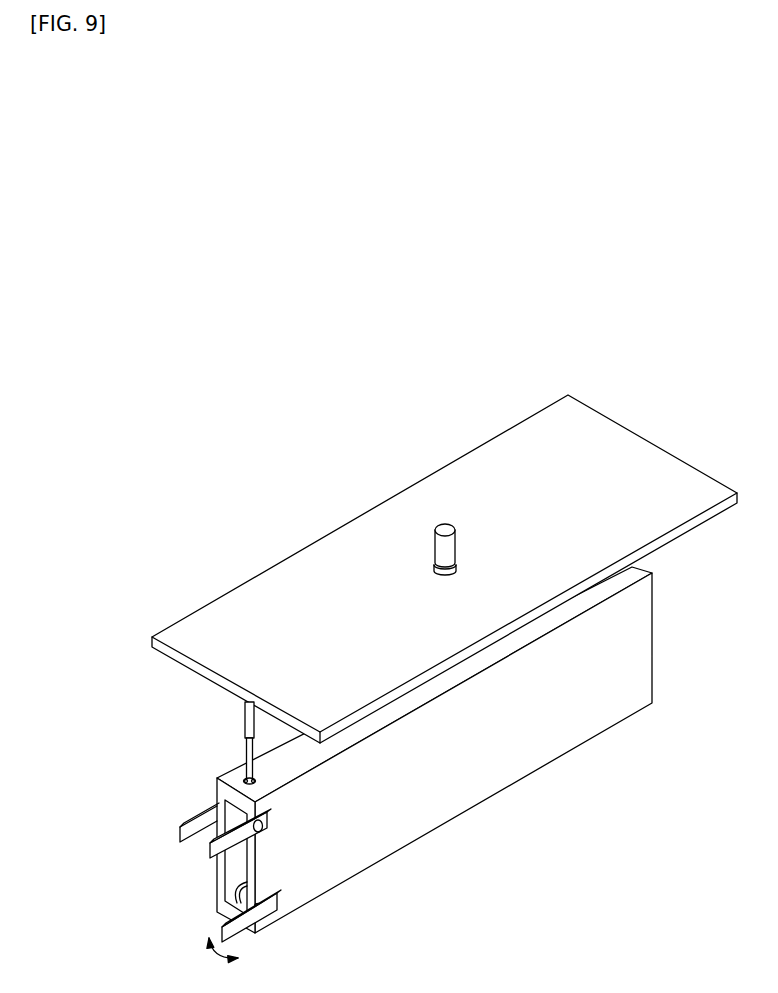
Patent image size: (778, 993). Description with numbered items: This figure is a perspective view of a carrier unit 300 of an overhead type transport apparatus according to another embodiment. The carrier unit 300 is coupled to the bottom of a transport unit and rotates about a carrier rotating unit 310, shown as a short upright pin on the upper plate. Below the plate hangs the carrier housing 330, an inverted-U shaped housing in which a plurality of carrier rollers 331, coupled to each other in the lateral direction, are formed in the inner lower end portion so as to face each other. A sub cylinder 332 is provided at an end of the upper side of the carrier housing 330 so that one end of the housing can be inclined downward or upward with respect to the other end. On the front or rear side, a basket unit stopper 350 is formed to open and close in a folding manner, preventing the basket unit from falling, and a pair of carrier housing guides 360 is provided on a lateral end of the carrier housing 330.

The carrier unit 300 is at (431, 659).
The carrier rotating unit 310 is at (434, 563).
The carrier housing 330 is at (652, 627).
The carrier roller 331 is at (236, 892).
The sub cylinder 332 is at (247, 730).
The basket unit stopper 350 is at (222, 930).
The carrier housing guide 360 is at (180, 829).